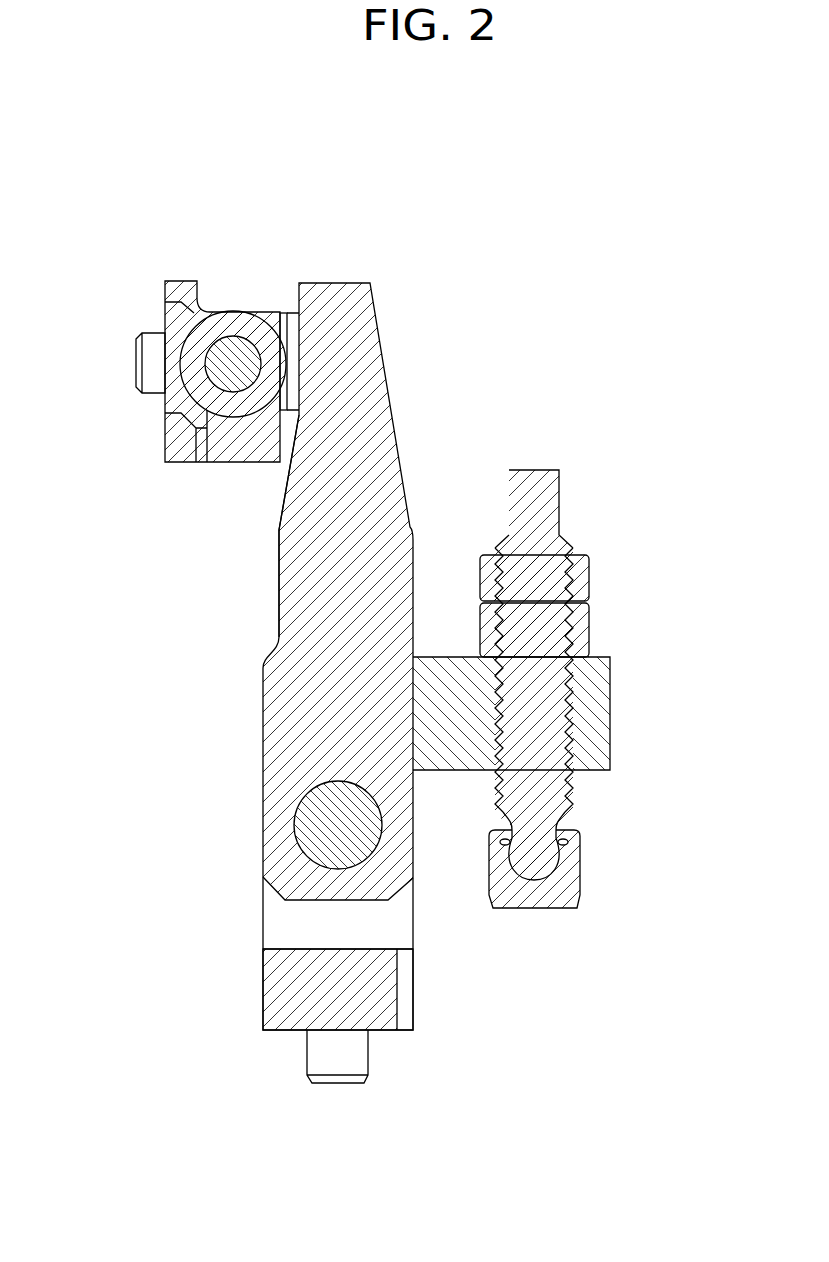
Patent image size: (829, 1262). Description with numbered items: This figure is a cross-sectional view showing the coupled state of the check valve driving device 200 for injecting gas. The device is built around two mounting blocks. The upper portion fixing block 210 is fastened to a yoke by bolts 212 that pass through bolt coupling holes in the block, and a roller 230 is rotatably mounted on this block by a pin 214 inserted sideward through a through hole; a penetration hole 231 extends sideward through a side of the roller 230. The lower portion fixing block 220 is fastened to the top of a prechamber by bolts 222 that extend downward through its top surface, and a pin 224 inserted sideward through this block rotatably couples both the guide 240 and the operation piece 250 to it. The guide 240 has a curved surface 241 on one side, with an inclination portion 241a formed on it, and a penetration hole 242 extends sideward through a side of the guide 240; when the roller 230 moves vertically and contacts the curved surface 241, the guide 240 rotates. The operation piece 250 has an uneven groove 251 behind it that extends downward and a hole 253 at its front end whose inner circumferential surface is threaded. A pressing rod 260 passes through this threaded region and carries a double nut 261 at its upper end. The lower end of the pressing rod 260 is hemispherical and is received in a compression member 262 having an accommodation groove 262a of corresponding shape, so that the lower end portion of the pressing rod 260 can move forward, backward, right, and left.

The check valve driving device 200 is at (150, 731).
The upper portion fixing block 210 is at (230, 476).
The bolt 212 is at (152, 347).
The pin 214 is at (233, 360).
The lower portion fixing block 220 is at (248, 1000).
The bolt 222 is at (345, 1054).
The pin 224 is at (335, 855).
The roller 230 is at (217, 300).
The penetration hole 231 is at (213, 366).
The guide 240 is at (407, 389).
The curved surface 241 is at (278, 568).
The inclination portion 241a is at (278, 500).
The penetration hole 242 is at (305, 830).
The operation piece 250 is at (628, 722).
The uneven groove 251 is at (413, 725).
The hole 253 is at (570, 735).
The pressing rod 260 is at (574, 500).
The double nut 261 is at (578, 580).
The compression member 262 is at (580, 882).
The accommodation groove 262a is at (548, 858).